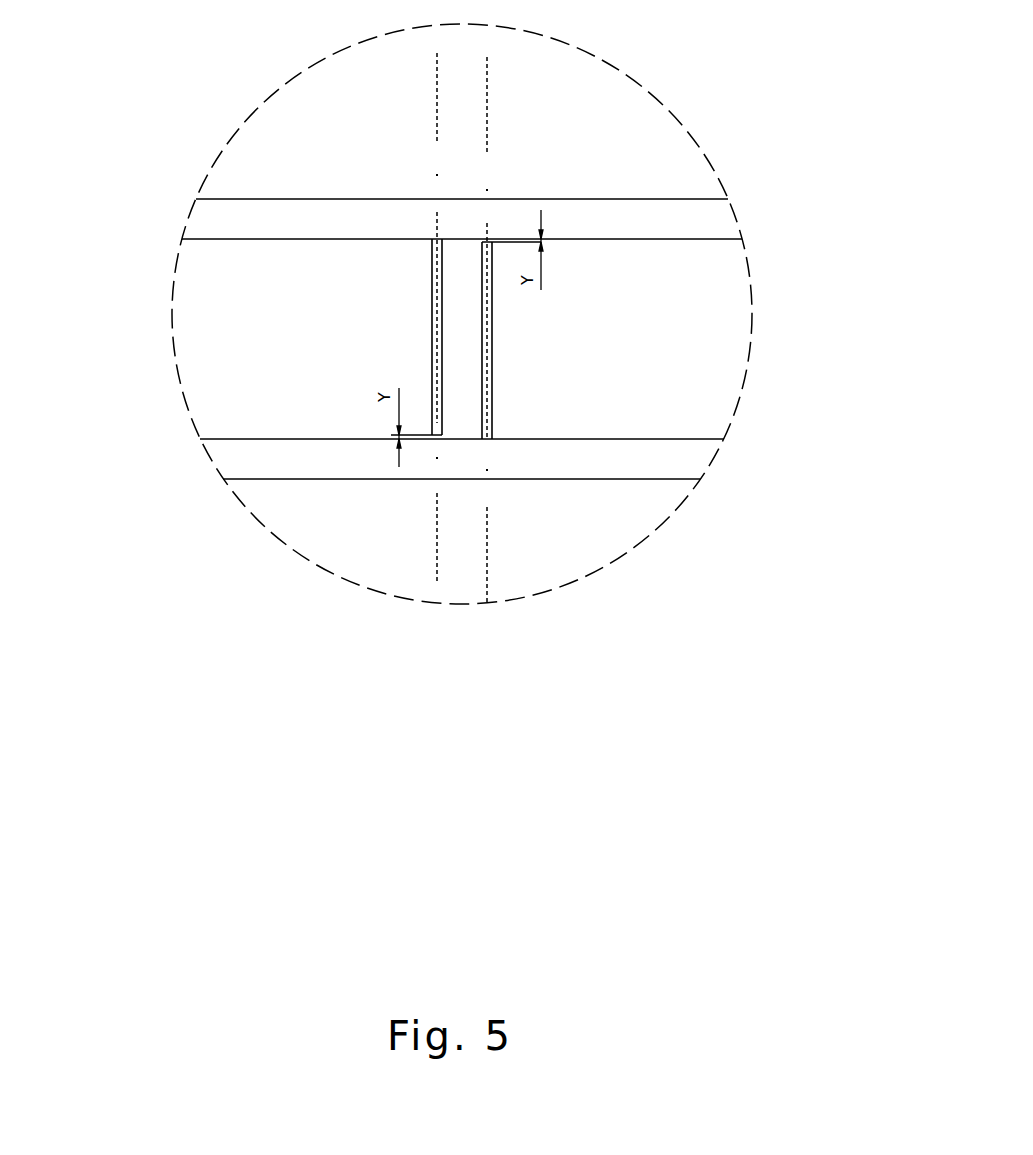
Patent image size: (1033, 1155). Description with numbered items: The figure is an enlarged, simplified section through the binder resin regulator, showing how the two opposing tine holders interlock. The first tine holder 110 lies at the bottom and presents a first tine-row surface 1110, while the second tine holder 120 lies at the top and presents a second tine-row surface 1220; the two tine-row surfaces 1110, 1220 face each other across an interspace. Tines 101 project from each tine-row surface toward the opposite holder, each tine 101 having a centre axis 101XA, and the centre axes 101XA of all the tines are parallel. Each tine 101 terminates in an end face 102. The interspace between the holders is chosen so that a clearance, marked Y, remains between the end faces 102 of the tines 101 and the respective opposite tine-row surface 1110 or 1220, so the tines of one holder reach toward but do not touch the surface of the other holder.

The centre axis 101XA is at (433, 278).
The end face 102 is at (487, 240).
The second tine holder 120 is at (610, 198).
The second tine-row surface 1220 is at (260, 240).
The tine 101 is at (495, 355).
The first tine-row surface 1110 is at (612, 438).
The first tine holder 110 is at (611, 480).